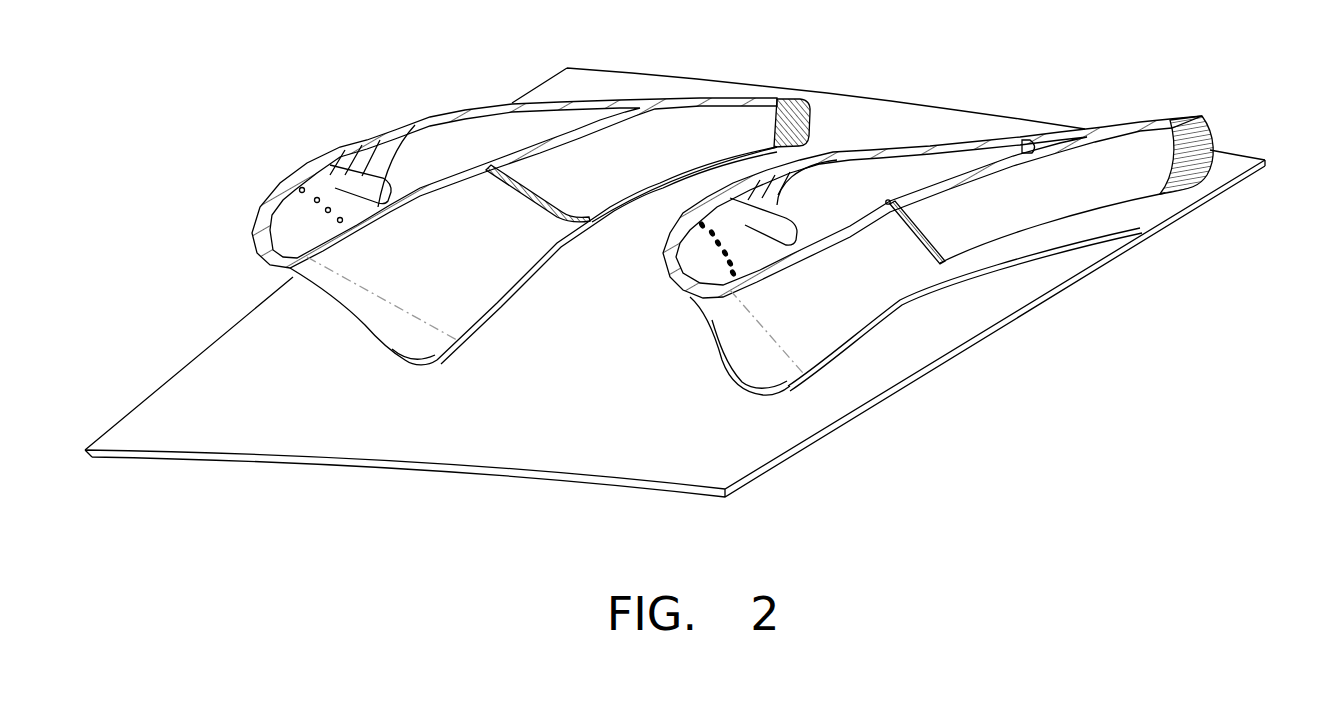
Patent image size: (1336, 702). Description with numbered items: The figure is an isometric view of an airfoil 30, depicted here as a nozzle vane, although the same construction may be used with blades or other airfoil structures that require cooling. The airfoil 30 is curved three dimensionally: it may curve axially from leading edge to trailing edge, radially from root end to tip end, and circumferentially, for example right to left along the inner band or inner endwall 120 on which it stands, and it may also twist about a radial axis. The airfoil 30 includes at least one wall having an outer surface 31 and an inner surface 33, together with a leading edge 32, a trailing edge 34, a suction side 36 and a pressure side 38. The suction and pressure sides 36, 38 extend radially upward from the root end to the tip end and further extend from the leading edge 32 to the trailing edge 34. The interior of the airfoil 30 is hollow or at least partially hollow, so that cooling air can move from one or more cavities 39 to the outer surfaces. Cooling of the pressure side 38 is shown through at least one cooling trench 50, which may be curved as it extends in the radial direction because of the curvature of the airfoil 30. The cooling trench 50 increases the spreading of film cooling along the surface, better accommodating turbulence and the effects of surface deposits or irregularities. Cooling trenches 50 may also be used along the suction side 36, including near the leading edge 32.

The airfoil 30 is at (438, 84).
The outer surface 31 is at (460, 256).
The leading edge 32 is at (362, 326).
The inner surface 33 is at (462, 159).
The trailing edge 34 is at (824, 117).
The suction side 36 is at (595, 94).
The pressure side 38 is at (465, 280).
The cavity 39 is at (405, 152).
The cooling trench 50 is at (286, 183).
The inner band or inner endwall 120 is at (667, 452).